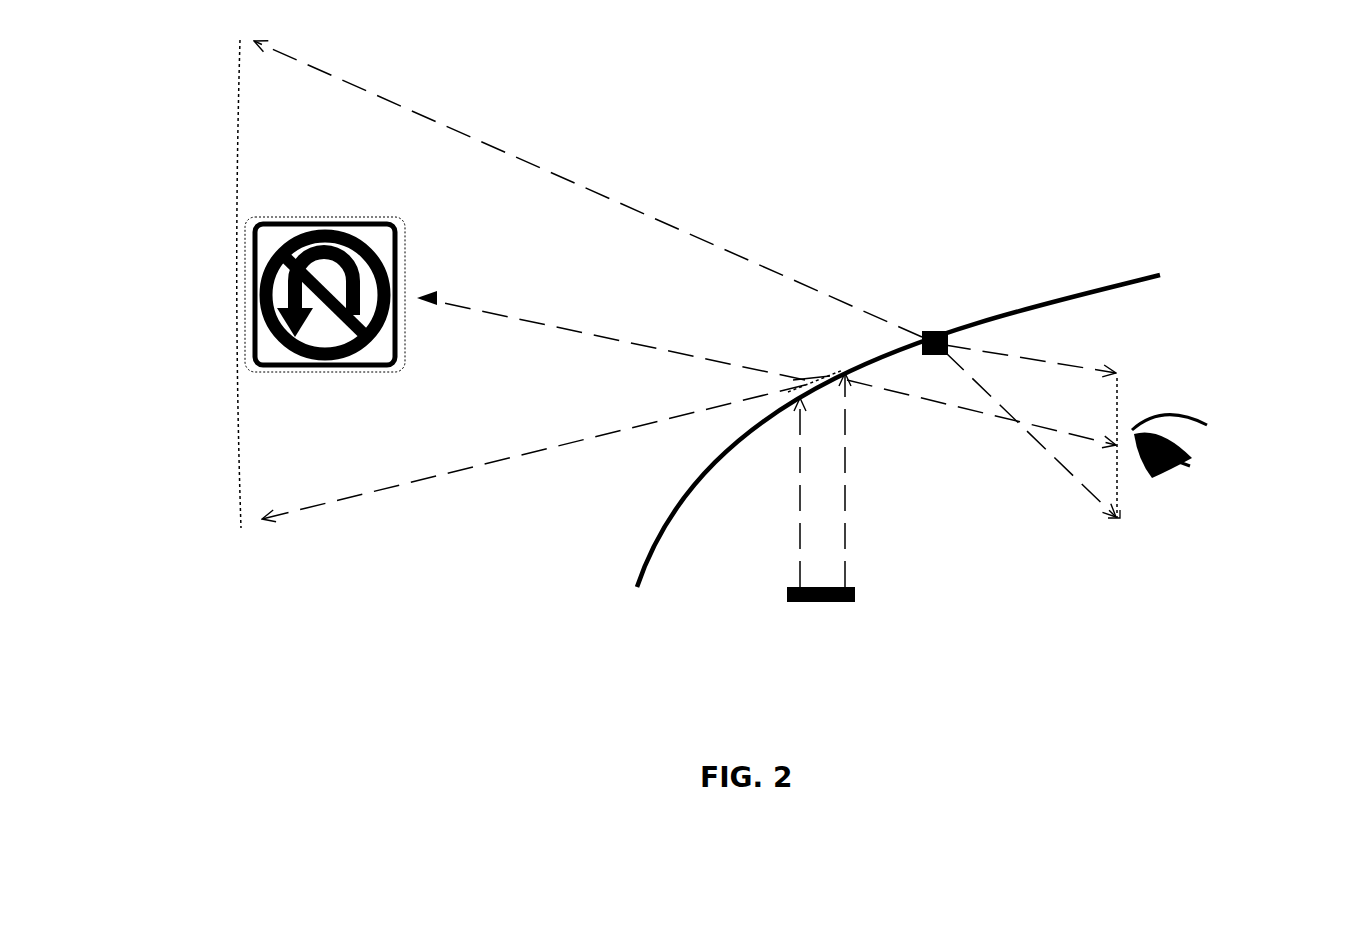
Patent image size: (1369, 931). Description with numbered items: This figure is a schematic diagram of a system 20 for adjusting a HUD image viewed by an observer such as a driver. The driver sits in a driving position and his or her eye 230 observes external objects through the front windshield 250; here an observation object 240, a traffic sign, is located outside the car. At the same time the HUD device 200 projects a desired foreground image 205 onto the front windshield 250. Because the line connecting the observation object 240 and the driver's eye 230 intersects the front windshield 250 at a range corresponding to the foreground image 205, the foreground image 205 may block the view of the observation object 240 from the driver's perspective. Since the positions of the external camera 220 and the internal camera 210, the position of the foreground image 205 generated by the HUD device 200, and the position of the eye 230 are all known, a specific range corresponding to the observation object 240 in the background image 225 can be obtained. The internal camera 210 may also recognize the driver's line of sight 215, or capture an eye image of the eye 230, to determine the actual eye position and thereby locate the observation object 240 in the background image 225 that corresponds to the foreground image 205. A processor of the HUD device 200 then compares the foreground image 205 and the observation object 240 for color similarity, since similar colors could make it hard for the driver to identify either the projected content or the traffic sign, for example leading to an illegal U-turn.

The system 20 is at (821, 133).
The HUD device 200 is at (822, 605).
The foreground image 205 is at (815, 372).
The internal camera 210 is at (950, 327).
The line of sight 215 is at (1112, 446).
The external camera 220 is at (916, 330).
The background image 225 is at (230, 281).
The eye 230 is at (1190, 405).
The observation object 240 is at (317, 213).
The front windshield 250 is at (658, 527).